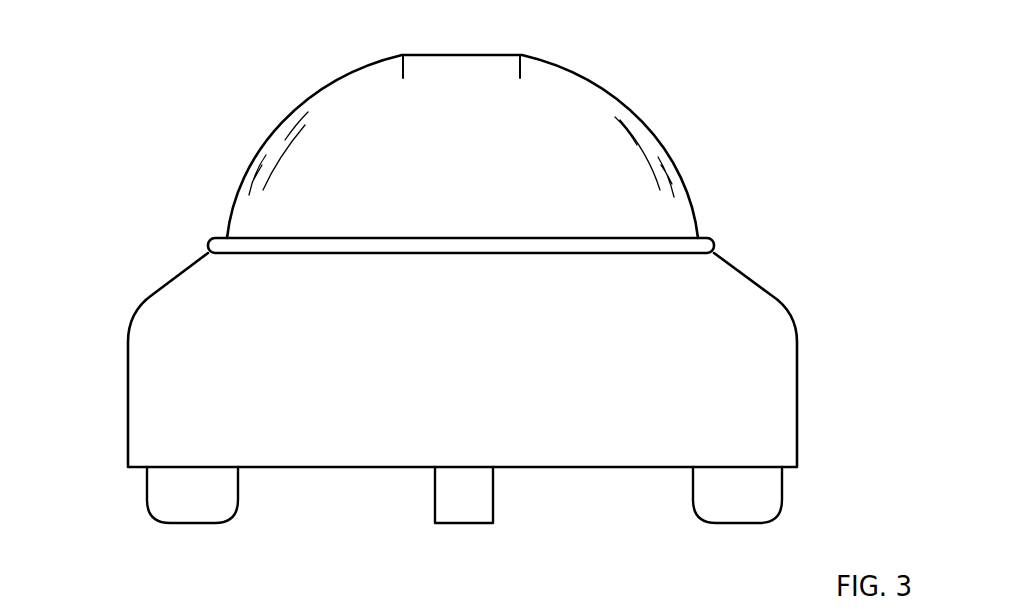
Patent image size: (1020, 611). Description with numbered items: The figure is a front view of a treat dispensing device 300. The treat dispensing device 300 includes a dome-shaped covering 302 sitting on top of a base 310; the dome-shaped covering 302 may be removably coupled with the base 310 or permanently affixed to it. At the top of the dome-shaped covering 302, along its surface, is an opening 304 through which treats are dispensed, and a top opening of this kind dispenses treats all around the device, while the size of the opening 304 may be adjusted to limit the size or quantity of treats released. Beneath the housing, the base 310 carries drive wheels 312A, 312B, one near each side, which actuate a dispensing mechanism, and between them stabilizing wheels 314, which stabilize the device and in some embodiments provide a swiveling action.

The treat dispensing device 300 is at (727, 34).
The dome-shaped covering 302 is at (83, 50).
The opening 304 is at (445, 56).
The base 310 is at (72, 250).
The drive wheel 312A is at (232, 514).
The drive wheel 312B is at (782, 502).
The stabilizing wheels 314 is at (494, 511).